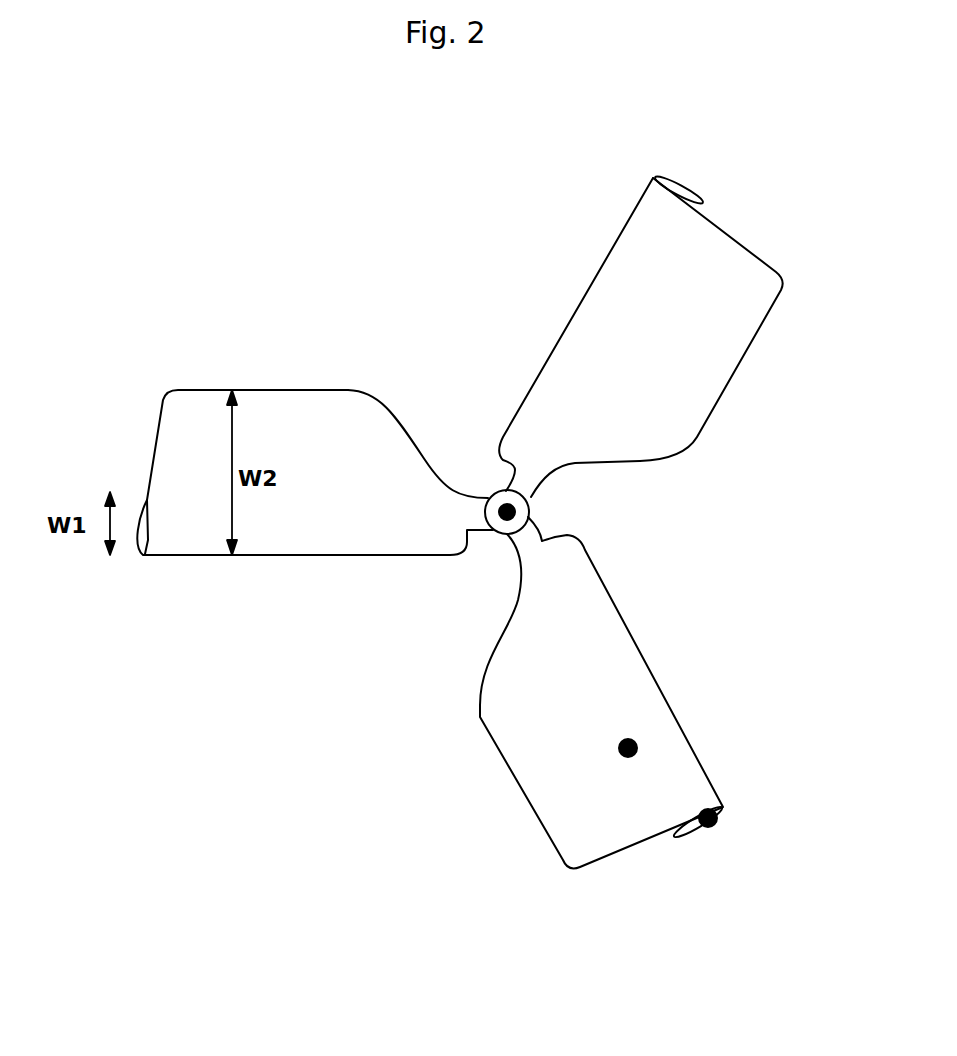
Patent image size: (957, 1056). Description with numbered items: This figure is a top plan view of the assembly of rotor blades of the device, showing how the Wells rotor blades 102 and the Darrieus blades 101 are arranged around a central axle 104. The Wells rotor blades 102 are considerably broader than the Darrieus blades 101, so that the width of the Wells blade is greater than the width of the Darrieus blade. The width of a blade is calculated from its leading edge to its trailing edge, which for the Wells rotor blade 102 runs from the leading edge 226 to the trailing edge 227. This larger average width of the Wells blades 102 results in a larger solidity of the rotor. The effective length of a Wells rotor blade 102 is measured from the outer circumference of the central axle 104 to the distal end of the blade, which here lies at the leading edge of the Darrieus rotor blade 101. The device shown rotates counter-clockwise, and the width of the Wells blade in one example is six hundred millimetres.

The Darrieus blade 101 is at (655, 177).
The Wells rotor blade 102 is at (628, 748).
The central axle 104 is at (515, 512).
The leading edge 226 is at (573, 312).
The trailing edge 227 is at (730, 382).